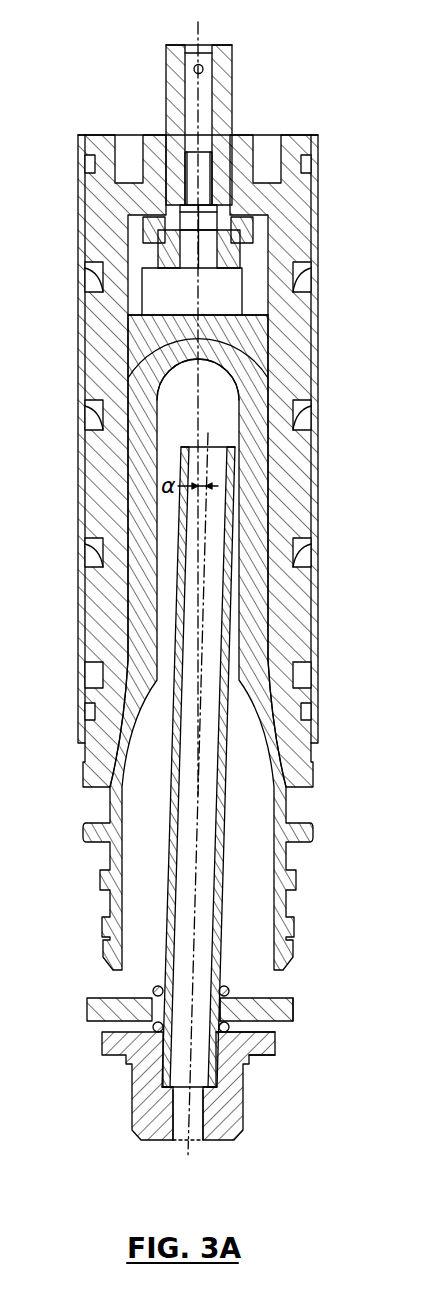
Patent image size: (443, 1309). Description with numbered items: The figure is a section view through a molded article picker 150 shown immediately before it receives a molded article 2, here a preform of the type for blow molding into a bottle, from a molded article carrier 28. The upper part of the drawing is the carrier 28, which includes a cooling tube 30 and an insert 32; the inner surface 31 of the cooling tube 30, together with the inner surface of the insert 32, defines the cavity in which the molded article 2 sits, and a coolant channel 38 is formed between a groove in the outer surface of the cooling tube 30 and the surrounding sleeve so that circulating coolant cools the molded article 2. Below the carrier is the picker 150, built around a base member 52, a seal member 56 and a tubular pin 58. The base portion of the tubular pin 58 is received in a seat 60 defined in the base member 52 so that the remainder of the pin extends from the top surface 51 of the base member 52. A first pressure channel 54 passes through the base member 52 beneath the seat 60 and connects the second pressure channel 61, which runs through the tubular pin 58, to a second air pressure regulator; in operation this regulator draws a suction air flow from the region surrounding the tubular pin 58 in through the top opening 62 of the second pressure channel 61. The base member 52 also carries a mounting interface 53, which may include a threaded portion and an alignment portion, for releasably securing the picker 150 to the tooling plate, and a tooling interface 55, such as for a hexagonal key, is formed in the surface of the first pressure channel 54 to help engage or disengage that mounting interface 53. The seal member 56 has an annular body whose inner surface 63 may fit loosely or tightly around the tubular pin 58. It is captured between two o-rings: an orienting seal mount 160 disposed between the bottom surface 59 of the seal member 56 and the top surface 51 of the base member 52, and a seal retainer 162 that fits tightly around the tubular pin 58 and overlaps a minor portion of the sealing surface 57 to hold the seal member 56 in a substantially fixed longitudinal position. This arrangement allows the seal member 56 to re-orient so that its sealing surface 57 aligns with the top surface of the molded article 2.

The molded article 2 is at (255, 512).
The molded article carrier 28 is at (348, 140).
The cooling tube 30 is at (293, 299).
The inner surface 31 is at (300, 580).
The insert 32 is at (257, 345).
The coolant channel 38 is at (303, 675).
The top surface 51 is at (245, 1002).
The base member 52 is at (245, 1058).
The mounting interface 53 is at (98, 1032).
The first pressure channel 54 is at (183, 1120).
The tooling interface 55 is at (203, 1123).
The seal member 56 is at (294, 1010).
The sealing surface 57 is at (287, 996).
The tubular pin 58 is at (220, 870).
The bottom surface 59 is at (258, 1036).
The seat 60 is at (214, 1090).
The second pressure channel 61 is at (203, 793).
The top opening 62 is at (165, 372).
The inner surface 63 is at (226, 986).
The molded article picker 150 is at (303, 1140).
The orienting seal mount 160 is at (110, 1000).
The seal retainer 162 is at (152, 990).